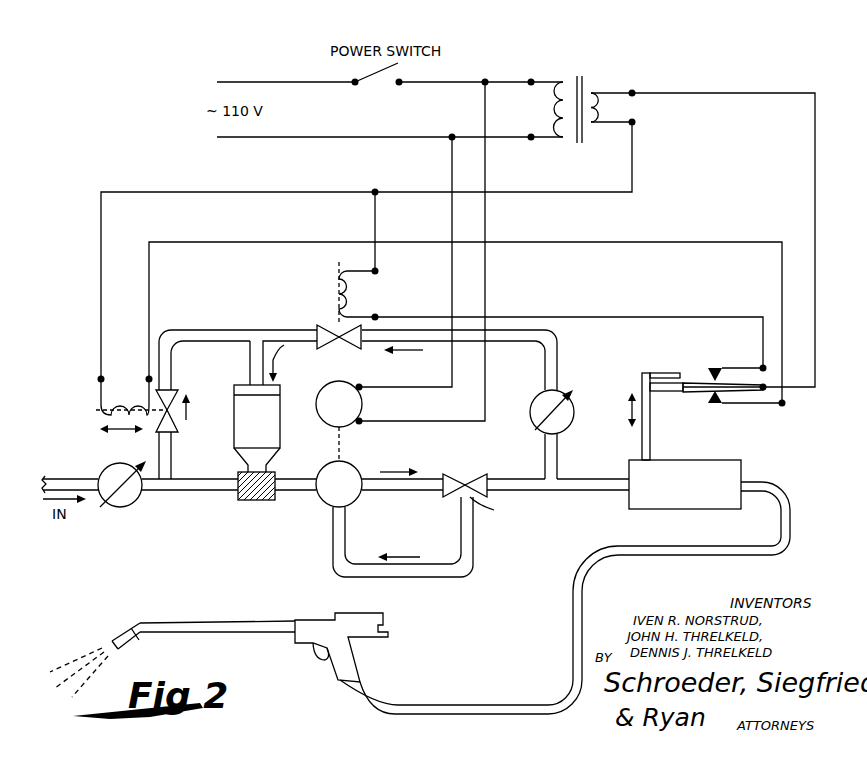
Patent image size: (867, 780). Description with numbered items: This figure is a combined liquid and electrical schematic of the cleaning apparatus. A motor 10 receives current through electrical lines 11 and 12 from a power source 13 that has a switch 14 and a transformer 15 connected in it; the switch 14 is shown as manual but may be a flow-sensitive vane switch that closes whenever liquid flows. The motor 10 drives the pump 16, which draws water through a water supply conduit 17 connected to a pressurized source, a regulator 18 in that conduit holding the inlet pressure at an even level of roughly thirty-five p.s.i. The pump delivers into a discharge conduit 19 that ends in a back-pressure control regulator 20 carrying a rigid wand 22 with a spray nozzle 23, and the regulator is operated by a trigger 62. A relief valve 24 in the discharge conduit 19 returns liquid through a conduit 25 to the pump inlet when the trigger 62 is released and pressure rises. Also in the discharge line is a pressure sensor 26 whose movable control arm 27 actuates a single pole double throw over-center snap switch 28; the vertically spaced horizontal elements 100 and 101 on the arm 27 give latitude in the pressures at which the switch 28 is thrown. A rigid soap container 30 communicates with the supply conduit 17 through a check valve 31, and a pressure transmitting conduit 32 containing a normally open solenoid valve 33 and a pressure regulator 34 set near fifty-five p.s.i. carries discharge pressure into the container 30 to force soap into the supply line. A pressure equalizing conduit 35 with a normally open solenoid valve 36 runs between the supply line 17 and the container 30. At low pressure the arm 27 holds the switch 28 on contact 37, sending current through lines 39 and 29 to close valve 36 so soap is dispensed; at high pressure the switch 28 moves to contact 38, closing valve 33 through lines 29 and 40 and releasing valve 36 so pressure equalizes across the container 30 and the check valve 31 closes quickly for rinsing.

The motor 10 is at (327, 385).
The electrical line 11 is at (452, 165).
The electrical line 12 is at (485, 165).
The power source 13 is at (258, 82).
The switch 14 is at (377, 73).
The transformer 15 is at (566, 82).
The pump 16 is at (356, 464).
The water supply conduit 17 is at (78, 479).
The regulator 18 is at (118, 506).
The discharge conduit 19 is at (573, 633).
The back-pressure control regulator 20 is at (388, 610).
The wand 22 is at (207, 623).
The spray nozzle 23 is at (118, 636).
The relief valve 24 is at (462, 474).
The conduit 25 is at (460, 520).
The pressure sensor 26 is at (629, 498).
The control arm 27 is at (642, 440).
The switch 28 is at (698, 383).
The line 29 is at (815, 145).
The soap container 30 is at (265, 428).
The check valve 31 is at (238, 475).
The pressure transmitting conduit 32 is at (559, 356).
The solenoid valve 33 is at (318, 326).
The pressure regulator 34 is at (575, 412).
The pressure equalizing conduit 35 is at (200, 330).
The solenoid valve 36 is at (180, 392).
The contact 37 is at (710, 404).
The contact 38 is at (711, 370).
The line 39 is at (678, 242).
The line 40 is at (600, 317).
The trigger 62 is at (322, 657).
The horizontally extending element 100 is at (665, 392).
The horizontally extending element 101 is at (667, 373).